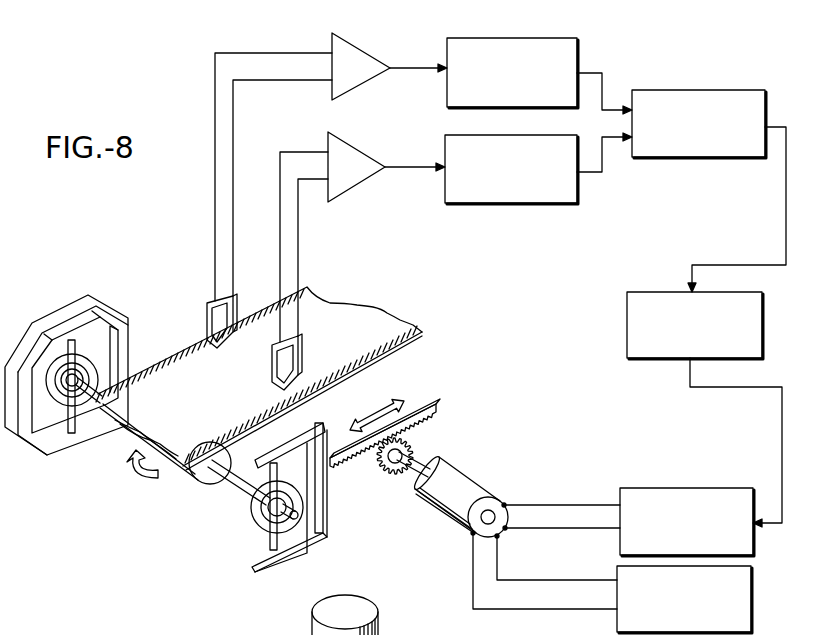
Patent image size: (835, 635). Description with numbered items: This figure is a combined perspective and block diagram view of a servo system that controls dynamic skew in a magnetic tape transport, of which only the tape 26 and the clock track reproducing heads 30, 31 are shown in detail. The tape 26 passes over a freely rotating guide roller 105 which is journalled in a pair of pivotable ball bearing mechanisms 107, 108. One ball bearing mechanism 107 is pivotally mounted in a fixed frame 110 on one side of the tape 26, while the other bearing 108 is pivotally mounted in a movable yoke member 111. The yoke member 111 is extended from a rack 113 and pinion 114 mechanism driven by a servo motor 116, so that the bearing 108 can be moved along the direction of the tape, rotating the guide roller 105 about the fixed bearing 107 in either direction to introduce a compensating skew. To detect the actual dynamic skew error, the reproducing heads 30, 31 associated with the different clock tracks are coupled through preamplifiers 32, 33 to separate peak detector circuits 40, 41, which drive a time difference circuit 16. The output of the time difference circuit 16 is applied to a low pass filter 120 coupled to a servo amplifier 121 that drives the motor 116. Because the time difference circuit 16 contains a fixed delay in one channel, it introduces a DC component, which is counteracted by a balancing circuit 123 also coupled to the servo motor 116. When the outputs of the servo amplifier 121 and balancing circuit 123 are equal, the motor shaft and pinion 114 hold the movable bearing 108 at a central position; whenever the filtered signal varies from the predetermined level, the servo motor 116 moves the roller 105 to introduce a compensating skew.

The time difference circuit 16 is at (650, 70).
The tape 26 is at (363, 302).
The clock track reproducing head 30 is at (207, 322).
The clock track reproducing head 31 is at (305, 366).
The preamplifier 32 is at (339, 21).
The preamplifier 33 is at (335, 118).
The peak detector circuit 40 is at (455, 38).
The peak detector circuit 41 is at (447, 135).
The guide roller 105 is at (183, 472).
The ball bearing mechanism 107 is at (90, 362).
The ball bearing mechanism 108 is at (250, 513).
The fixed frame 110 is at (122, 312).
The yoke member 111 is at (326, 540).
The rack 113 is at (436, 408).
The pinion 114 is at (396, 480).
The servo motor 116 is at (430, 508).
The low pass filter 120 is at (657, 292).
The servo amplifier 121 is at (647, 488).
The balancing circuit 123 is at (617, 620).